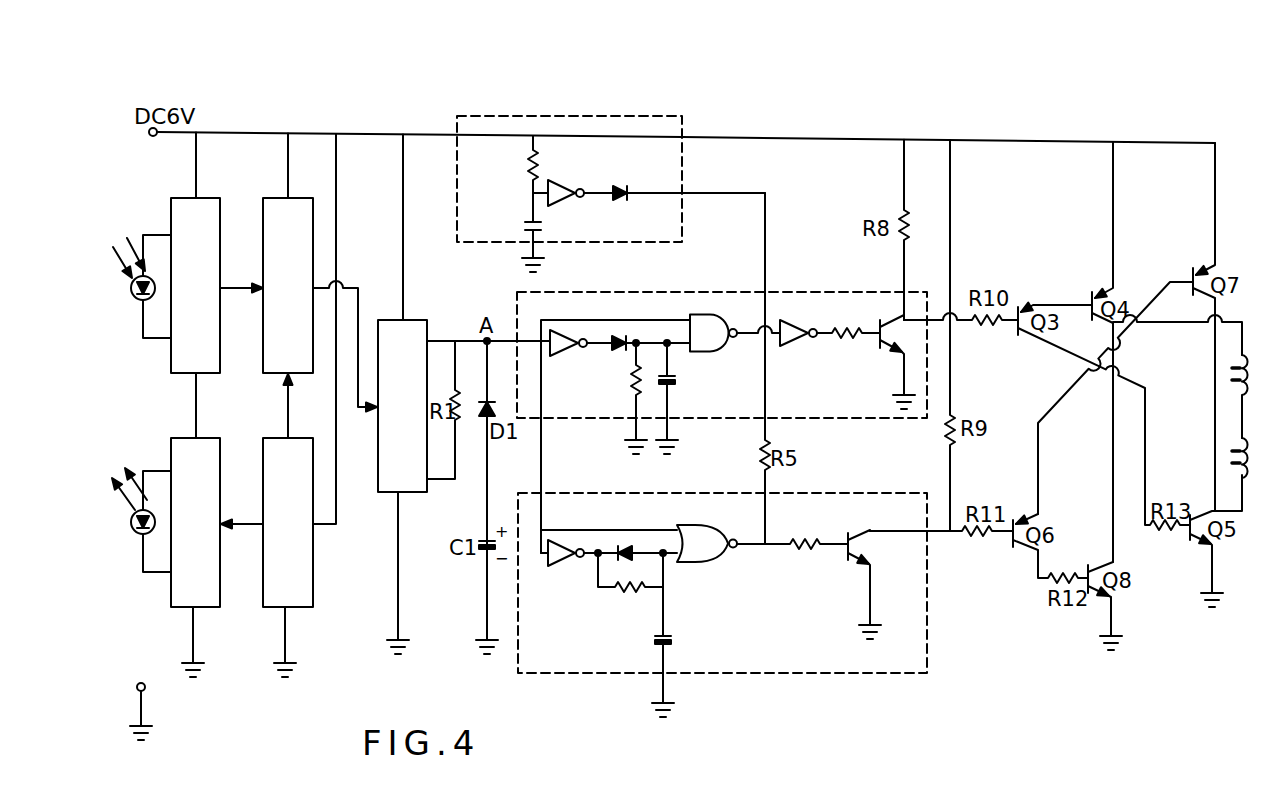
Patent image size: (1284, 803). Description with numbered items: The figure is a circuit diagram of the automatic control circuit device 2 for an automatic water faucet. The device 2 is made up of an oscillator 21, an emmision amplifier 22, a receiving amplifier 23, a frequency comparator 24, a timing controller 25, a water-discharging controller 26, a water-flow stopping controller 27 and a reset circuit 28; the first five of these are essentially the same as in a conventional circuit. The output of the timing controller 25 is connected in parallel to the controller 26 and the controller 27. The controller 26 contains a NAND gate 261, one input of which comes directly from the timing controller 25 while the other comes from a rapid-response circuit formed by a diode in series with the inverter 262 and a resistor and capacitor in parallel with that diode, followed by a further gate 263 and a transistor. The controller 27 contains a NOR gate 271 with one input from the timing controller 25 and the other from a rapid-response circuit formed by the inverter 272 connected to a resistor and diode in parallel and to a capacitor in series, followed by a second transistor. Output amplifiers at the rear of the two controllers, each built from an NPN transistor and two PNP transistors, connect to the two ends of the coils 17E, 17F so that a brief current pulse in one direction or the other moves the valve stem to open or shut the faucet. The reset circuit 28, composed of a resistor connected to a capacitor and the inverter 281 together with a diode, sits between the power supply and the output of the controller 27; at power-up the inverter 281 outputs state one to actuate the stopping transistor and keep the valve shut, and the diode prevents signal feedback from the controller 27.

The automatic control circuit device 2 is at (896, 69).
The oscillator 21 is at (306, 548).
The emmision amplifier 22 is at (214, 547).
The receiving amplifier 23 is at (217, 312).
The frequency comparator 24 is at (301, 312).
The timing controller 25 is at (389, 437).
The water-discharging controller 26 is at (722, 399).
The water-flow stopping controller 27 is at (722, 579).
The reset circuit 28 is at (611, 164).
The NAND gate 261 is at (718, 345).
The inverter 262 is at (582, 346).
The NAND gate 263 is at (804, 336).
The NOR gate 271 is at (707, 557).
The inverter 272 is at (580, 560).
The inverter 281 is at (565, 198).
The coil 17E is at (1258, 396).
The coil 17F is at (1258, 458).